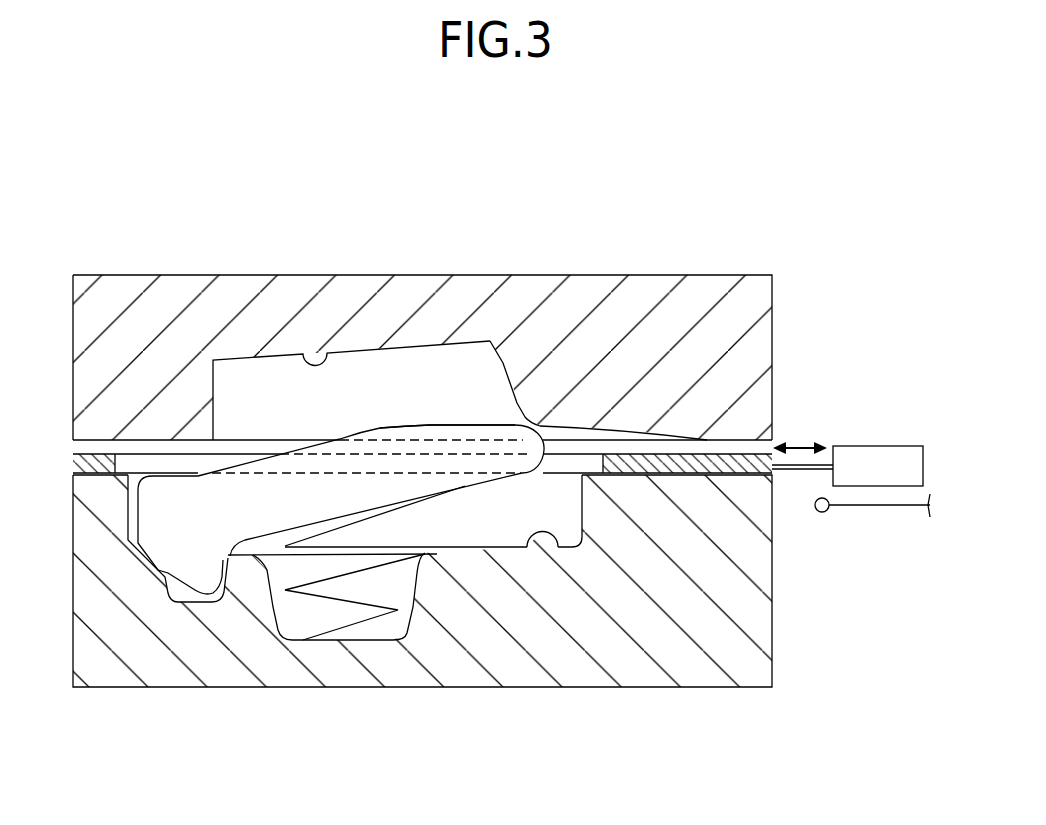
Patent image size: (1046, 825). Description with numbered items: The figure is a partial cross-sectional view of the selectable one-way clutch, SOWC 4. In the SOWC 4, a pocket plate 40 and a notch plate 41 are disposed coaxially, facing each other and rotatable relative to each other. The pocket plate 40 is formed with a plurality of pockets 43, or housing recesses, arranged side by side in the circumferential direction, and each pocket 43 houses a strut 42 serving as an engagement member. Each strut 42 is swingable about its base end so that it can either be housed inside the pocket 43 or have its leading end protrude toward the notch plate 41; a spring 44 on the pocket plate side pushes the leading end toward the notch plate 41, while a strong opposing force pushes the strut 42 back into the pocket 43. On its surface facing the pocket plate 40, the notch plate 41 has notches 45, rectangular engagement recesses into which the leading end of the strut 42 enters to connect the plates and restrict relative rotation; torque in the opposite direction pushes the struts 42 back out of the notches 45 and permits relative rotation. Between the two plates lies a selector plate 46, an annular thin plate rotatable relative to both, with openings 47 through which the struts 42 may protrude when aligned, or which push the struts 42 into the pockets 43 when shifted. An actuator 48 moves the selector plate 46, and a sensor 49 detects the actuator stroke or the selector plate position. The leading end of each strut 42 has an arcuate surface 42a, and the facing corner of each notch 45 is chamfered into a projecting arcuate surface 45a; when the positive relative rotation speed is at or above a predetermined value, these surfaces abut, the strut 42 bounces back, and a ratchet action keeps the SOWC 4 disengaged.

The Selectable One-Way Clutch (SOWC) 4 is at (772, 205).
The pocket plate 40 is at (713, 666).
The notch plate 41 is at (712, 298).
The strut 42 is at (433, 486).
The arcuate surface 42a is at (467, 424).
The pocket 43 is at (558, 549).
The spring 44 is at (352, 604).
The notch 45 is at (322, 346).
The projecting arcuate surface 45a is at (524, 416).
The selector plate 46 is at (762, 424).
The opening 47 is at (582, 440).
The actuator 48 is at (892, 446).
The sensor 49 is at (822, 513).